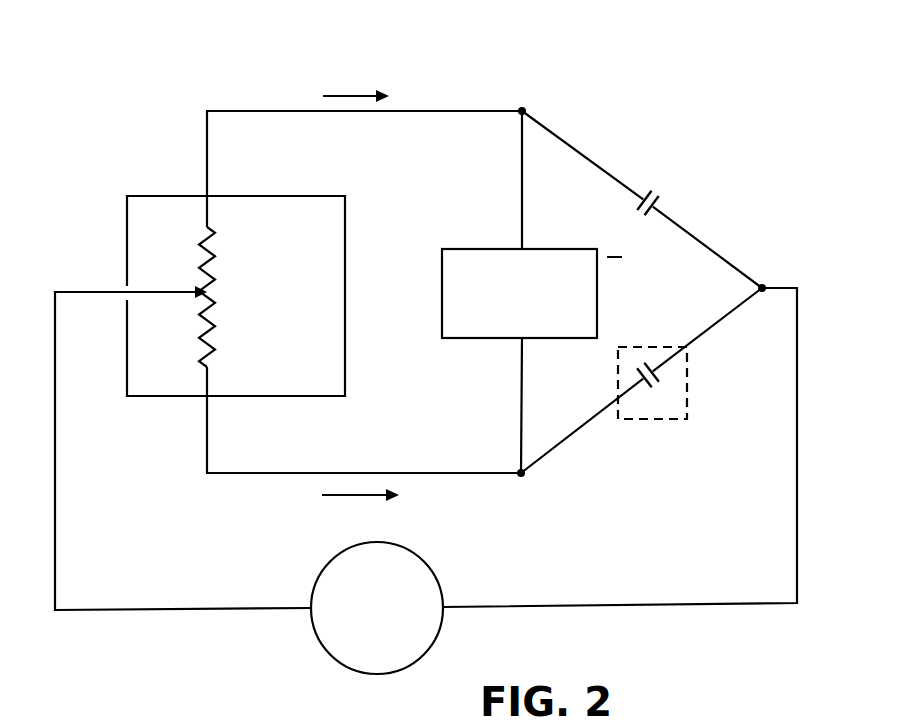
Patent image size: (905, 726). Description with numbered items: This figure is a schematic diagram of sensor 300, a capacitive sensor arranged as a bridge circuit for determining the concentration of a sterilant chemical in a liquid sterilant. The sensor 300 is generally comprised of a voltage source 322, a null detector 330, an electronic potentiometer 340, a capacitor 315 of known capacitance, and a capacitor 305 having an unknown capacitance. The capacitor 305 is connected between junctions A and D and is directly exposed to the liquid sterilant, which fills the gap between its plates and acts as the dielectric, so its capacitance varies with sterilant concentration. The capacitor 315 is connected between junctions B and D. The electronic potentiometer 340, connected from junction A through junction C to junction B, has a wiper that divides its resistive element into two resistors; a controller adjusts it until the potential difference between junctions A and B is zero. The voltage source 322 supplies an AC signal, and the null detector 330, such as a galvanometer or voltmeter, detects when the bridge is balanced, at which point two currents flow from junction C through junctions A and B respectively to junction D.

The sensor 300 is at (166, 77).
The capacitor 305 is at (688, 382).
The capacitor 315 is at (643, 188).
The voltage source 322 is at (335, 658).
The null detector 330 is at (475, 248).
The electronic potentiometer 340 is at (125, 225).